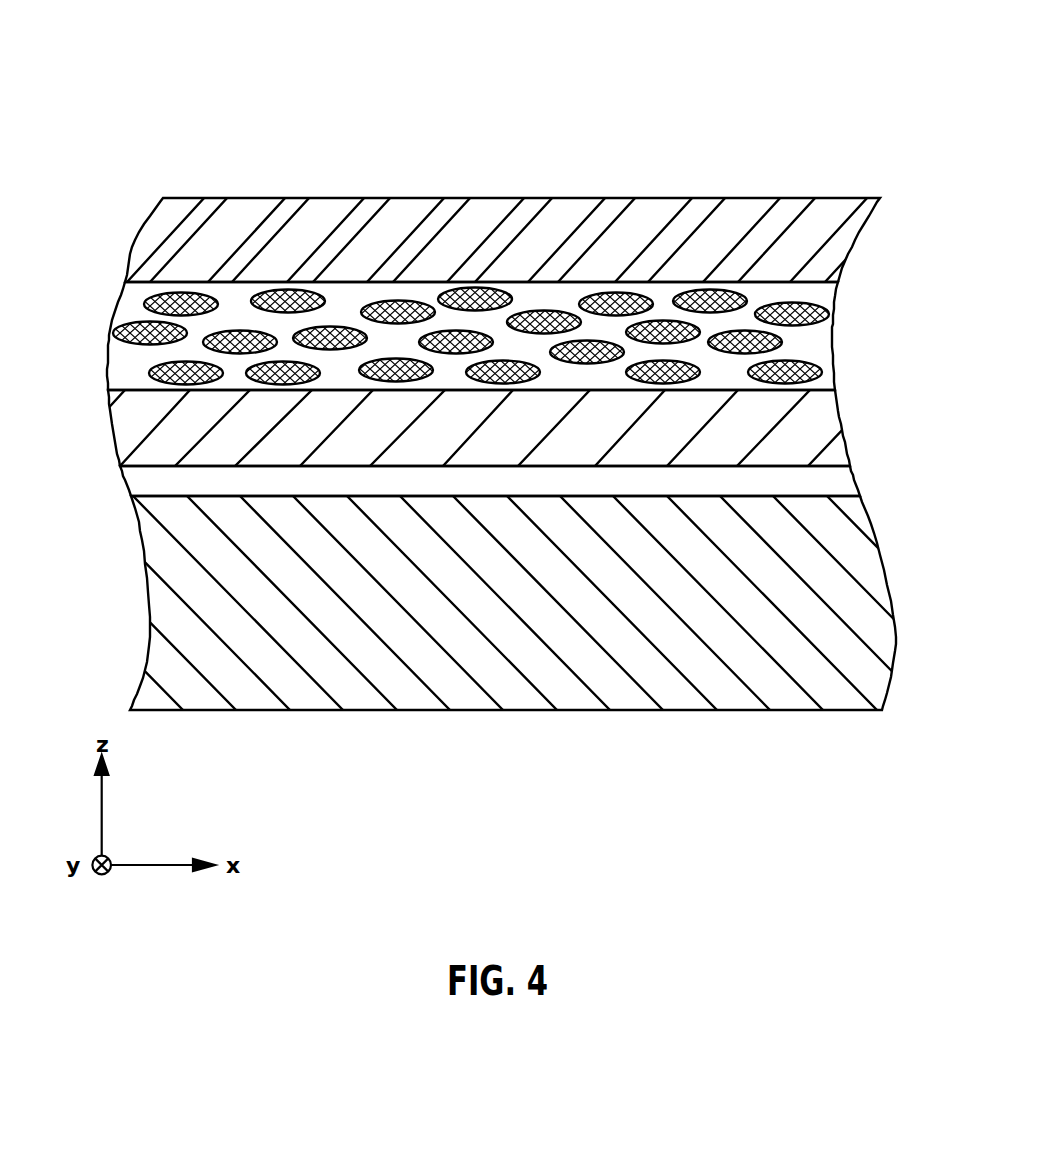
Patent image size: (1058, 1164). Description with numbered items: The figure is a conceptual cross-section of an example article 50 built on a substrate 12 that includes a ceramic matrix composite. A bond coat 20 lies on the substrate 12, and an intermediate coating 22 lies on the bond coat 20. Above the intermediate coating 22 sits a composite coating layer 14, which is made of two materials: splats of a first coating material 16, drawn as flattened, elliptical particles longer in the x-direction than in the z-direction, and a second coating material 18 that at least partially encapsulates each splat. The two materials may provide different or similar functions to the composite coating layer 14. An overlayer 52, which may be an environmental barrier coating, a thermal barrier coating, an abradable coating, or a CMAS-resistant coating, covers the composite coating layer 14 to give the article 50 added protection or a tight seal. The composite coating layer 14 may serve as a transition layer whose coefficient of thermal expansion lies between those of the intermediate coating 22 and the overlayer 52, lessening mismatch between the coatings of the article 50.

The article 50 is at (866, 98).
The overlayer 52 is at (838, 251).
The composite coating layer 14 is at (477, 344).
The first coating material 16 is at (116, 332).
The second coating material 18 is at (126, 368).
The intermediate coating 22 is at (820, 428).
The bond coat 20 is at (838, 478).
The substrate 12 is at (872, 587).